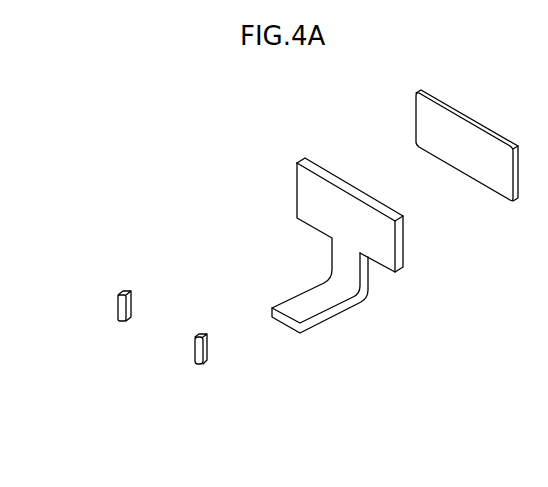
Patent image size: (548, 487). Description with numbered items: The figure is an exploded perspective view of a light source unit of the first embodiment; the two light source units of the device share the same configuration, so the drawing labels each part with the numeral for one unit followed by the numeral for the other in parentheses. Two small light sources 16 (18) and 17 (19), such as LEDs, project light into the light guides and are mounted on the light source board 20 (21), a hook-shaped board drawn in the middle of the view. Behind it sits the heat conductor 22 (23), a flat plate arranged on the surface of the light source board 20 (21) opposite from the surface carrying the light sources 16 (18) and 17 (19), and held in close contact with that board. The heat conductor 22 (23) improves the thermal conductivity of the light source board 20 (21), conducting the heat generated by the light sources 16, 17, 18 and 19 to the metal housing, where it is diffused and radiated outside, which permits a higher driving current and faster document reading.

The light source 16 is at (118, 311).
The light source 18 is at (74, 351).
The light source 17 is at (195, 358).
The light source 19 is at (153, 401).
The light source board 20 is at (318, 197).
The light source board 21 is at (297, 245).
The heat conductor 22 is at (415, 125).
The heat conductor 23 is at (405, 145).